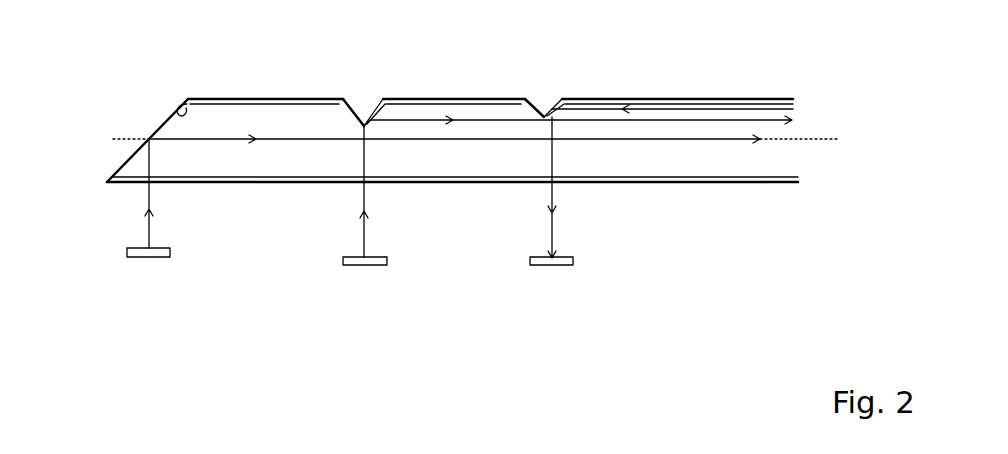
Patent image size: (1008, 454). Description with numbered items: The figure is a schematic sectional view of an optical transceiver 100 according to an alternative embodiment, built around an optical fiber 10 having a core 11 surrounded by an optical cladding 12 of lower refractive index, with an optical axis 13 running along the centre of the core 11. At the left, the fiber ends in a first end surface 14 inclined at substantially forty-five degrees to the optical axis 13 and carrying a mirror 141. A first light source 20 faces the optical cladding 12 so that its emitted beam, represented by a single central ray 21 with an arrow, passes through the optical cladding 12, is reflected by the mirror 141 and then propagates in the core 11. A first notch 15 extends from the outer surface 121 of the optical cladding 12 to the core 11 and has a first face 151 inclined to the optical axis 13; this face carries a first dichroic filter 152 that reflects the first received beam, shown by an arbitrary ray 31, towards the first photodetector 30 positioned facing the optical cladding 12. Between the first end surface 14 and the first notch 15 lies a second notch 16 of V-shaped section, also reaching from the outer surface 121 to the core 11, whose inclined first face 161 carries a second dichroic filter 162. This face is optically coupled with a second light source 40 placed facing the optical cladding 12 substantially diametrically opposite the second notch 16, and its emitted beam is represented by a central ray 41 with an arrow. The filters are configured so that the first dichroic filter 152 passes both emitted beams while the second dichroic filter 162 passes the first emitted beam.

The optical transceiver 100 is at (82, 57).
The optical fiber 10 is at (781, 76).
The core 11 is at (735, 170).
The optical cladding 12 is at (243, 99).
The outer surface 121 is at (698, 100).
The optical axis 13 is at (813, 142).
The first end surface 14 is at (176, 112).
The mirror 141 is at (115, 170).
The first notch 15 is at (547, 85).
The first face 151 is at (537, 99).
The first dichroic filter 152 is at (557, 107).
The second notch 16 is at (368, 87).
The first face 161 is at (373, 113).
The second dichroic filter 162 is at (345, 101).
The first light source 20 is at (160, 258).
The ray 21 is at (149, 230).
The first photodetector 30 is at (555, 267).
The ray 31 is at (552, 228).
The second light source 40 is at (373, 267).
The ray 41 is at (365, 237).